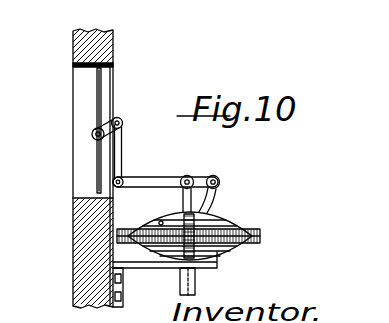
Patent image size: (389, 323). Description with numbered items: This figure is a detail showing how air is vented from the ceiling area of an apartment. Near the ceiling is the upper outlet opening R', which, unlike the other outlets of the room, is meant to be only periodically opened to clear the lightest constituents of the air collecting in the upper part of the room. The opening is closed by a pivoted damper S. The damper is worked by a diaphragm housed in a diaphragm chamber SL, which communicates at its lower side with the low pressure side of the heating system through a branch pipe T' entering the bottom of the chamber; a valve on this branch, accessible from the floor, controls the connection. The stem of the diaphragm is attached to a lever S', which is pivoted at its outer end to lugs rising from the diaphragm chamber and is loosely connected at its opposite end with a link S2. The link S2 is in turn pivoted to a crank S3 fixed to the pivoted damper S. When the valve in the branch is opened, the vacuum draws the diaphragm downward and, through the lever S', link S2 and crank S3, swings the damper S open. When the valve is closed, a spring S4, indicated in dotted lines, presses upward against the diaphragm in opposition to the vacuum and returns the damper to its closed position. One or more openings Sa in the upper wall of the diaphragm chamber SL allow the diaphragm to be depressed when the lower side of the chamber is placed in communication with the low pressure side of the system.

The upper outlet opening R' is at (71, 161).
The damper S is at (156, 120).
The crank S3 is at (113, 121).
The link S2 is at (123, 148).
The lever S' is at (166, 182).
The diaphragm chamber SL is at (238, 218).
The opening Sa is at (160, 222).
The spring S4 is at (218, 259).
The branch pipe T' is at (206, 284).